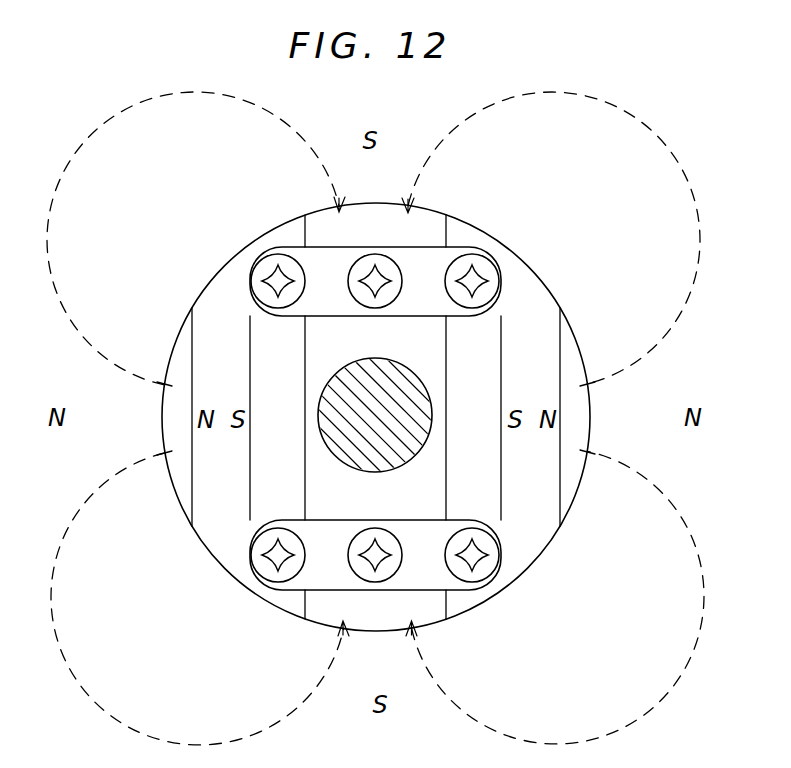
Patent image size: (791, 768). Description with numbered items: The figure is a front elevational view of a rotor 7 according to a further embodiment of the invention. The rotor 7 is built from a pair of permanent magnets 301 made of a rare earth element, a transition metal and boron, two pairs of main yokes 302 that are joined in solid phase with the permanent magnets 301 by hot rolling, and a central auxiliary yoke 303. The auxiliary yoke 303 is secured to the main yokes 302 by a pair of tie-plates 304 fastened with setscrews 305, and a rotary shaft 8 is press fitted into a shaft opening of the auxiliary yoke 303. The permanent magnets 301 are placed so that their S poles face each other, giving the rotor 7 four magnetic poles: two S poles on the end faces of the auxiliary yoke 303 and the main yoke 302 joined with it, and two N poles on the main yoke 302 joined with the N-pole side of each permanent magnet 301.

The rotor 7 is at (570, 545).
The rotary shaft 8 is at (410, 372).
The permanent magnet 301 is at (222, 293).
The main yoke 302 is at (183, 487).
The auxiliary yoke 303 is at (408, 233).
The tie-plate 304 is at (337, 252).
The setscrew 305 is at (477, 263).